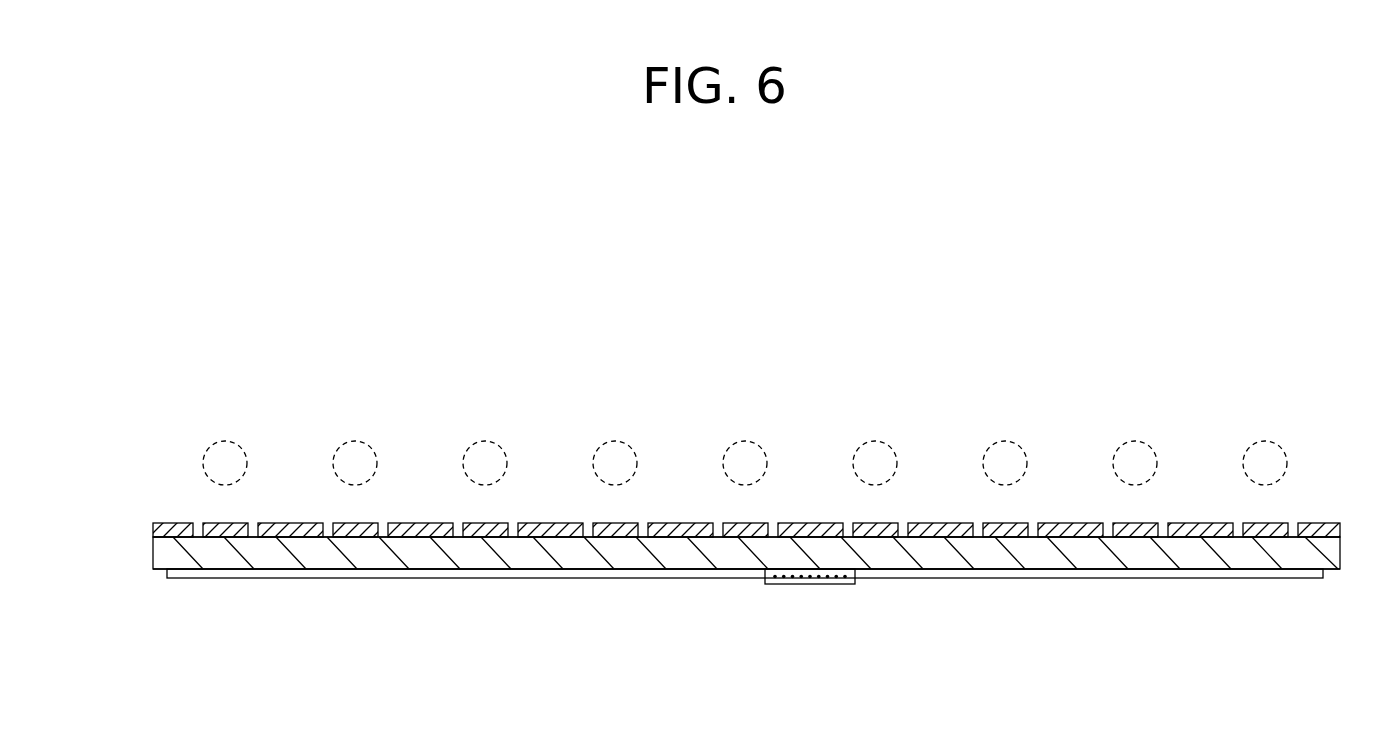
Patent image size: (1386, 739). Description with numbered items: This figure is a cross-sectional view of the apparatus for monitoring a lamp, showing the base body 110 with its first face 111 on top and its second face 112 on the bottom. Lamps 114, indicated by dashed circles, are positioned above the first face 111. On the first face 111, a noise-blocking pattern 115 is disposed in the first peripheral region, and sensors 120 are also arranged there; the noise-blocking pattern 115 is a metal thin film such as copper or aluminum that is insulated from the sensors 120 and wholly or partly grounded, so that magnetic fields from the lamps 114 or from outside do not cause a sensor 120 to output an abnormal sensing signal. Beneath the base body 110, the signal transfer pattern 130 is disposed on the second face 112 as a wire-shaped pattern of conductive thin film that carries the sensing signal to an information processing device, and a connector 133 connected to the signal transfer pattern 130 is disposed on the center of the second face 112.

The base body 110 is at (146, 568).
The first face 111 is at (1340, 537).
The second face 112 is at (1340, 569).
The lamp 114 is at (223, 441).
The noise-blocking pattern 115 is at (420, 523).
The sensor 120 is at (235, 523).
The signal transfer pattern 130 is at (488, 579).
The connector 133 is at (838, 584).